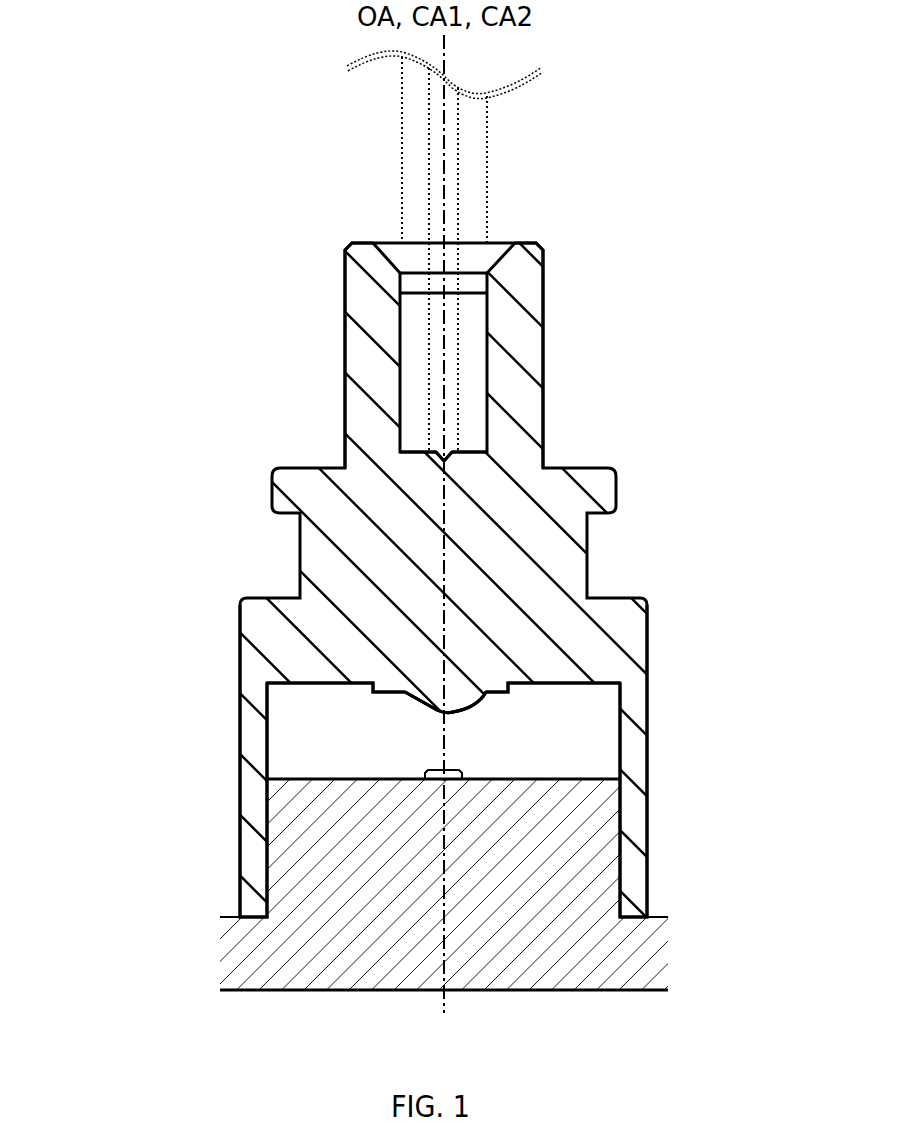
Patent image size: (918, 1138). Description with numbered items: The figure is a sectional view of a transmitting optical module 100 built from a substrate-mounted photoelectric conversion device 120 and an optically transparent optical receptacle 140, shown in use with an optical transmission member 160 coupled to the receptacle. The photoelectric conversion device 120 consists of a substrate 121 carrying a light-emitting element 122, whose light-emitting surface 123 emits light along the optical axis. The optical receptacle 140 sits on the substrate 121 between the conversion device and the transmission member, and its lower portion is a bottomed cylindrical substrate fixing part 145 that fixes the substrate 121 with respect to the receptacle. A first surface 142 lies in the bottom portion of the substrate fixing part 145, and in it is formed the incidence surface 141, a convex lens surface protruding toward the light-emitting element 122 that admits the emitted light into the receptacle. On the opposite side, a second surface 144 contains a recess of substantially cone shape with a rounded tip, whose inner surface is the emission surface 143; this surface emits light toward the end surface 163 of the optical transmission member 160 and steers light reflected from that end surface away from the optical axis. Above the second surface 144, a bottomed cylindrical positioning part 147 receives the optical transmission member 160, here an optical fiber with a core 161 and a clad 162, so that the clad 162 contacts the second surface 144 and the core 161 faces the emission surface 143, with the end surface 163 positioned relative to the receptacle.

The optical module 100 is at (806, 27).
The photoelectric conversion device 120 is at (145, 830).
The substrate 121 is at (303, 868).
The light-emitting element 122 is at (440, 781).
The light-emitting surface 123 is at (433, 770).
The optical receptacle 140 is at (591, 243).
The incidence surface 141 is at (422, 706).
The first surface 142 is at (553, 684).
The emission surface 143 is at (428, 471).
The second surface 144 is at (468, 452).
The substrate fixing part 145 is at (637, 767).
The positioning part 147 is at (372, 350).
The optical transmission member 160 is at (310, 118).
The core 161 is at (432, 160).
The clad 162 is at (418, 118).
The end surface 163 is at (440, 457).